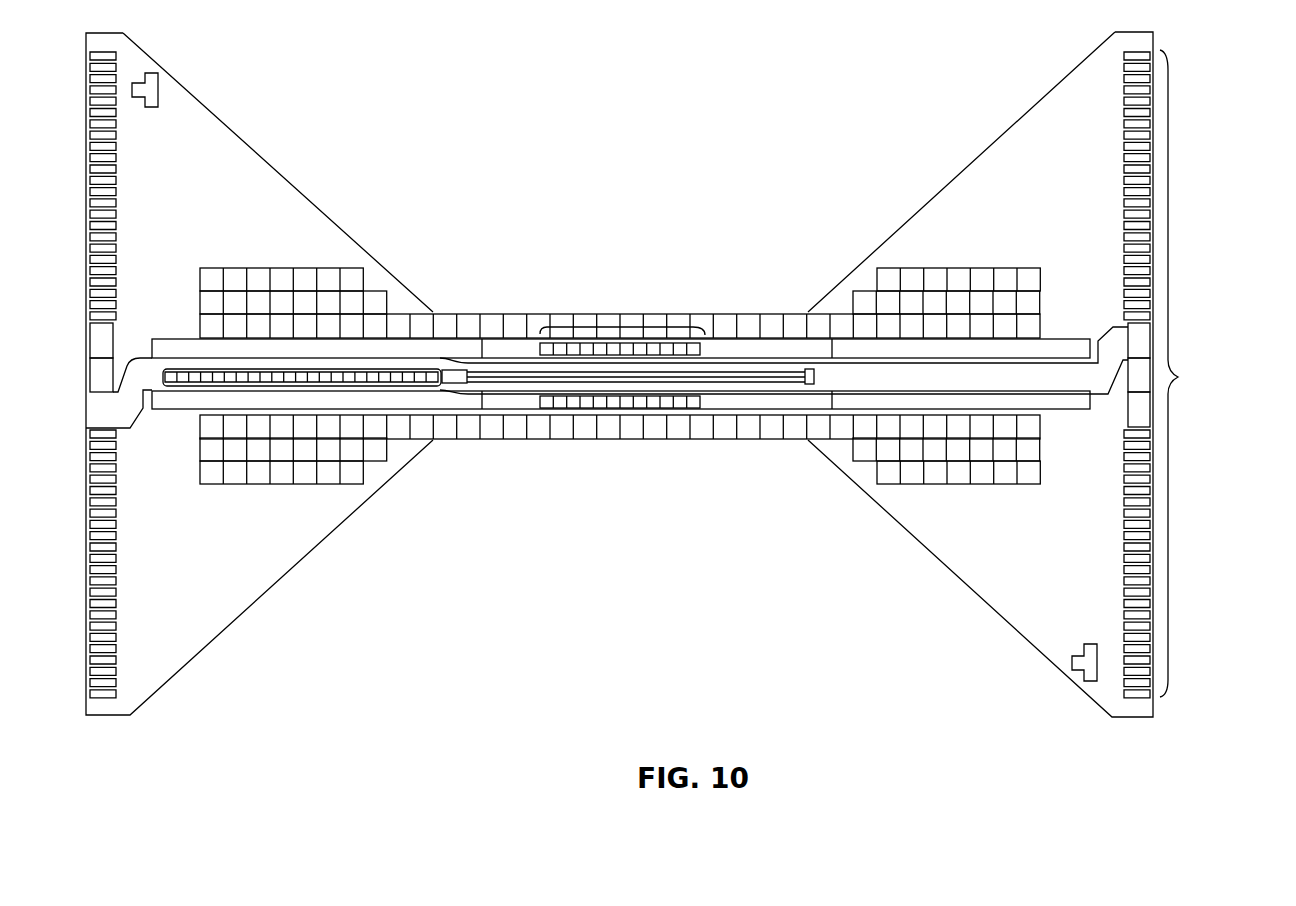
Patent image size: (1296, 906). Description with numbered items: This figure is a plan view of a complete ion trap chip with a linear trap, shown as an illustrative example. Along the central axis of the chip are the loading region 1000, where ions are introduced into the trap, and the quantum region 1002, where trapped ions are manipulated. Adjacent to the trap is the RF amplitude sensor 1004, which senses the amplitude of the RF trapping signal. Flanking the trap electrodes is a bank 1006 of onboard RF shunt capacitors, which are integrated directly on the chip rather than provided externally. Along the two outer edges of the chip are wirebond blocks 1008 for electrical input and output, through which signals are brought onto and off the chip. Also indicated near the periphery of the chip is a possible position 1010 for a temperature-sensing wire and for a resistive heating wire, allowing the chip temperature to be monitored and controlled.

The loading region 1000 is at (297, 387).
The quantum region 1002 is at (620, 322).
The RF amplitude sensor 1004 is at (814, 377).
The bank of onboard RF shunt capacitors 1006 is at (897, 272).
The wirebond blocks 1008 is at (1178, 377).
The position for temperature-sensing wire and resistive heating wire 1010 is at (1112, 700).